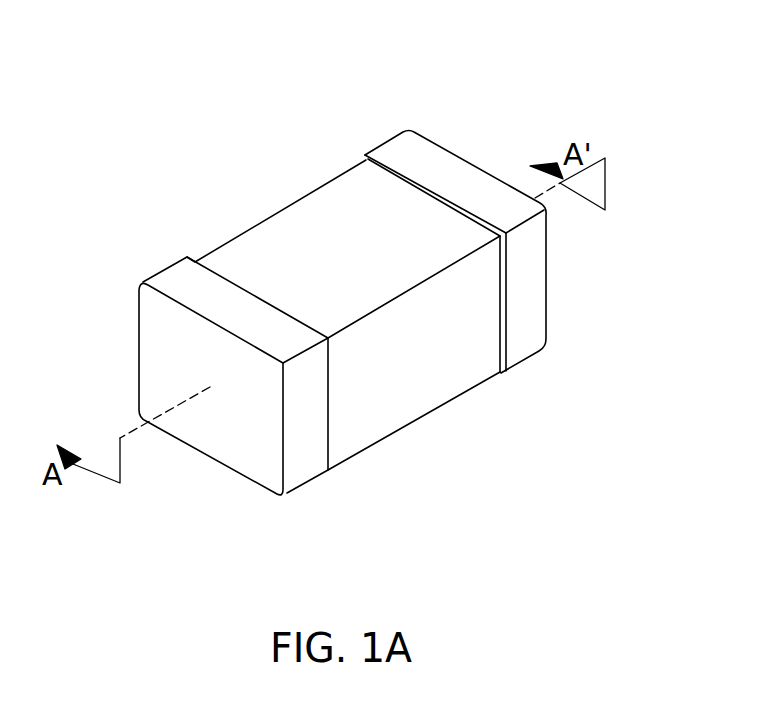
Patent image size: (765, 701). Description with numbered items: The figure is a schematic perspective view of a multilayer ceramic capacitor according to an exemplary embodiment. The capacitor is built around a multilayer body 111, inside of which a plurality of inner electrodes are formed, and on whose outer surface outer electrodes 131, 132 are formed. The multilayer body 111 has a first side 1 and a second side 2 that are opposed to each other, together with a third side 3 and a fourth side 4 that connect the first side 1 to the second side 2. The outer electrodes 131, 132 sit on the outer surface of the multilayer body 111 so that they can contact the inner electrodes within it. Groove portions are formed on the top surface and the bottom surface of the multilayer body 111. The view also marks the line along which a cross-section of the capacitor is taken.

The first side 1 is at (407, 317).
The second side 2 is at (343, 274).
The third side 3 is at (233, 429).
The fourth side 4 is at (520, 203).
The multilayer body 111 is at (353, 193).
The outer electrode 131 is at (302, 478).
The outer electrode 132 is at (540, 312).